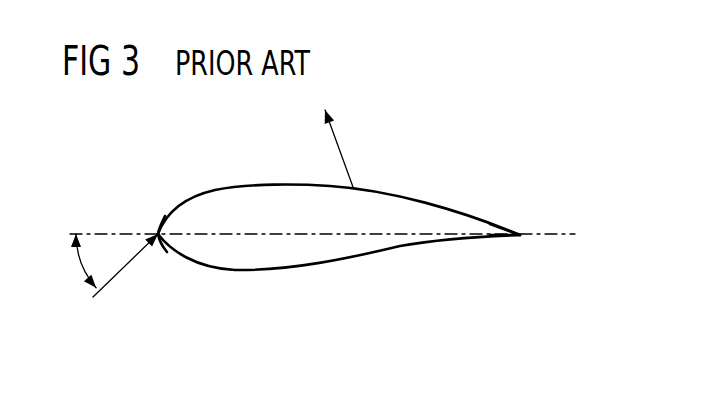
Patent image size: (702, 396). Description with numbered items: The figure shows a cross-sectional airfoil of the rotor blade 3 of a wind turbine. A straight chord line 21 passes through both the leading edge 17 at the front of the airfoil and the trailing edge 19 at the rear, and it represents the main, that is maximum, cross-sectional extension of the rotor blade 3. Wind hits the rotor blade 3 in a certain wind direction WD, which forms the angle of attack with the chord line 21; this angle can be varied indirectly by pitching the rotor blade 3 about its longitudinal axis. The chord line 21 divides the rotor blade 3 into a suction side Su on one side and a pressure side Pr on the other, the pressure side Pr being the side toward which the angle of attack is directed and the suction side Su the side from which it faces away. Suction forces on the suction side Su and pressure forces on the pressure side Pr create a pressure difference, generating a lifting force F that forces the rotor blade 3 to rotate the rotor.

The rotor blade 3 is at (338, 233).
The leading edge 17 is at (158, 234).
The trailing edge 19 is at (520, 237).
The chord line 21 is at (222, 232).
The suction side Su is at (278, 178).
The pressure side Pr is at (262, 305).
The lifting force F is at (342, 148).
The wind direction WD is at (118, 273).